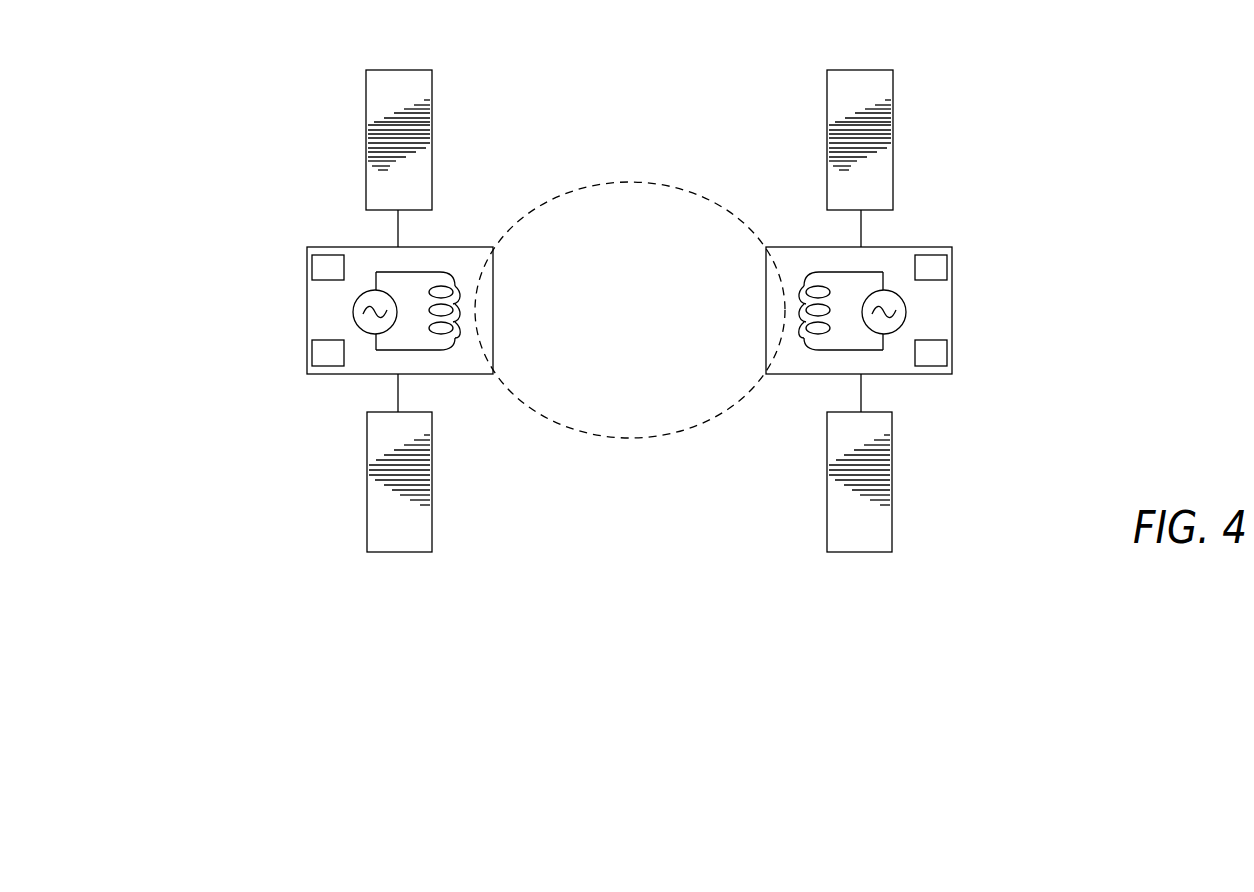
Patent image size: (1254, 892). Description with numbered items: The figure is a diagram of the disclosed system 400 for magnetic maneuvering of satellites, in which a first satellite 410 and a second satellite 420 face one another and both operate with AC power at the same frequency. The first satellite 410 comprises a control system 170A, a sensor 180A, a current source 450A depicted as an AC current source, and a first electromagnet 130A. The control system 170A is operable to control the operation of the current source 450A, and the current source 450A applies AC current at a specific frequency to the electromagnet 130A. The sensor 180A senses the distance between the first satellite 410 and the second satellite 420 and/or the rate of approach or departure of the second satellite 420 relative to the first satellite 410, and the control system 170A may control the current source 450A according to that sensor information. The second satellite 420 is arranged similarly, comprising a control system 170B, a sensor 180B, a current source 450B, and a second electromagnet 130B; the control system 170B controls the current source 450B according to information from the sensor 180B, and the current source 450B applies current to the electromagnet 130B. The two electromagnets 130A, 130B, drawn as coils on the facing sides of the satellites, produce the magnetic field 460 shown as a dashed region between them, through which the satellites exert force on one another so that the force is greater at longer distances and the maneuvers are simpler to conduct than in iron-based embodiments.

The system for magnetic maneuvering of satellites 400 is at (1047, 614).
The first satellite 410 is at (949, 311).
The second satellite 420 is at (311, 311).
The first electromagnet 130A is at (806, 284).
The second electromagnet 130B is at (452, 284).
The control system 170A is at (937, 265).
The control system 170B is at (322, 265).
The sensor 180A is at (936, 356).
The sensor 180B is at (323, 356).
The current source 450A is at (891, 334).
The current source 450B is at (368, 334).
The magnetic field 460 is at (627, 172).